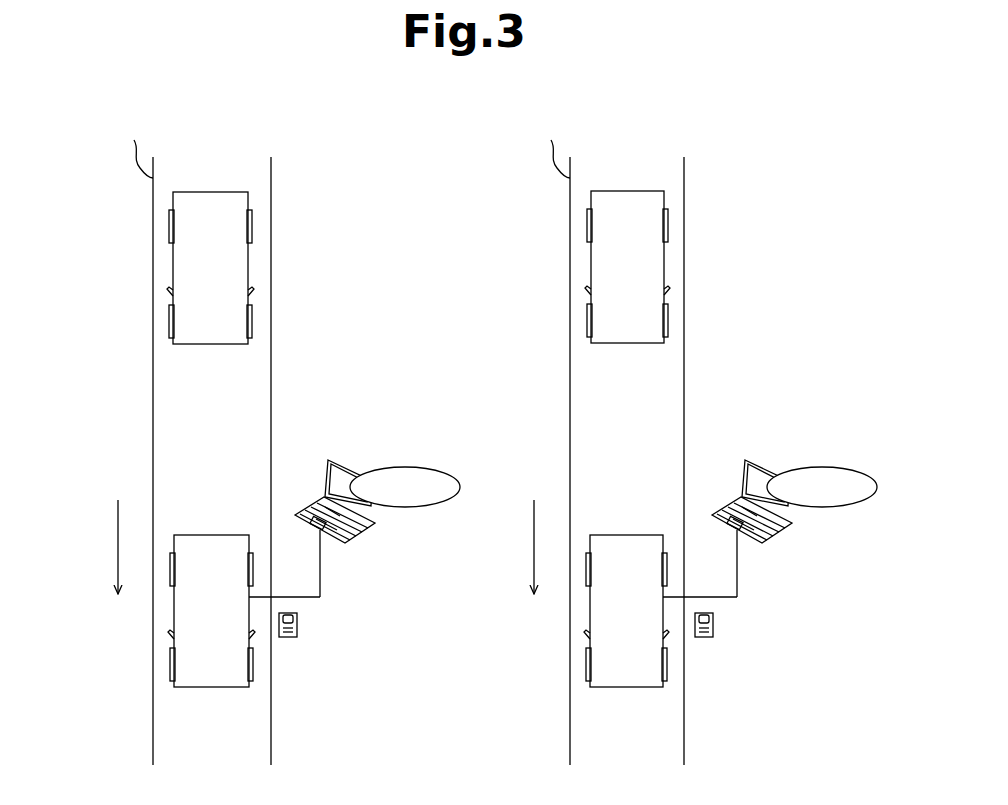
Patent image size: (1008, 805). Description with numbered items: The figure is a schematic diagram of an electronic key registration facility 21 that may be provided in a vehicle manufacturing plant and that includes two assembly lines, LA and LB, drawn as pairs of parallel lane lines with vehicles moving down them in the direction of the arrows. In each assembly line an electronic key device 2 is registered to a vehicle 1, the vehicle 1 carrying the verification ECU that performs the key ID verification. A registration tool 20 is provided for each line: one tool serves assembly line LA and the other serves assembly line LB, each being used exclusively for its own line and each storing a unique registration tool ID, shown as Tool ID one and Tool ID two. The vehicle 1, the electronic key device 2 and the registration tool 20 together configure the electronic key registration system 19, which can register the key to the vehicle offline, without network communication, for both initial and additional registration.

The vehicle 1 is at (190, 192).
The electronic key device 2 is at (298, 623).
The electronic key registration system 19 is at (403, 426).
The registration tool 20 is at (358, 535).
The electronic key registration facility 21 is at (120, 82).